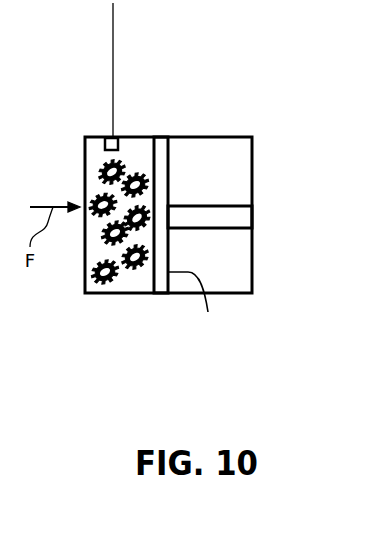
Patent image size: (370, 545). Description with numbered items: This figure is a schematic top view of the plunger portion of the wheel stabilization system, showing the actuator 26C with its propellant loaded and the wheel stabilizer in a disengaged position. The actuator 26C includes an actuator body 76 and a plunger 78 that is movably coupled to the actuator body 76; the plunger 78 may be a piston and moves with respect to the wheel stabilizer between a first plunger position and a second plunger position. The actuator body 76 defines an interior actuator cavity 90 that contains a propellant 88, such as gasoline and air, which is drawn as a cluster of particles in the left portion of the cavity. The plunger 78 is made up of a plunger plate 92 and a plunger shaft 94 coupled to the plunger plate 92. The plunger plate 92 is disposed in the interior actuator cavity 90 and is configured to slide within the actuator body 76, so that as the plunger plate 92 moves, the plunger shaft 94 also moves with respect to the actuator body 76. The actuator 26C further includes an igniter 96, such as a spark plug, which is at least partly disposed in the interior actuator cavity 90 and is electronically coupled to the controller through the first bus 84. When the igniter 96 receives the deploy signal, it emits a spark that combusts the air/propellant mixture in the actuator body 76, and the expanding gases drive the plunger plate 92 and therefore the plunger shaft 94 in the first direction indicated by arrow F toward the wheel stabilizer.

The actuator 26C is at (162, 137).
The actuator body 76 is at (245, 137).
The plunger 78 is at (208, 229).
The first bus 84 is at (113, 32).
The propellant 88 is at (97, 171).
The interior actuator cavity 90 is at (136, 283).
The plunger plate 92 is at (208, 312).
The plunger shaft 94 is at (208, 205).
The igniter 96 is at (105, 148).